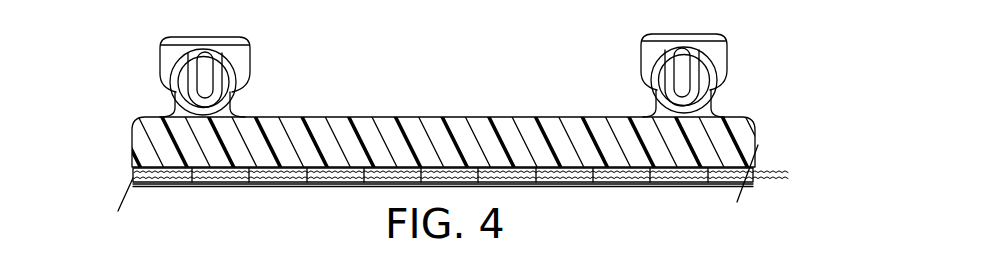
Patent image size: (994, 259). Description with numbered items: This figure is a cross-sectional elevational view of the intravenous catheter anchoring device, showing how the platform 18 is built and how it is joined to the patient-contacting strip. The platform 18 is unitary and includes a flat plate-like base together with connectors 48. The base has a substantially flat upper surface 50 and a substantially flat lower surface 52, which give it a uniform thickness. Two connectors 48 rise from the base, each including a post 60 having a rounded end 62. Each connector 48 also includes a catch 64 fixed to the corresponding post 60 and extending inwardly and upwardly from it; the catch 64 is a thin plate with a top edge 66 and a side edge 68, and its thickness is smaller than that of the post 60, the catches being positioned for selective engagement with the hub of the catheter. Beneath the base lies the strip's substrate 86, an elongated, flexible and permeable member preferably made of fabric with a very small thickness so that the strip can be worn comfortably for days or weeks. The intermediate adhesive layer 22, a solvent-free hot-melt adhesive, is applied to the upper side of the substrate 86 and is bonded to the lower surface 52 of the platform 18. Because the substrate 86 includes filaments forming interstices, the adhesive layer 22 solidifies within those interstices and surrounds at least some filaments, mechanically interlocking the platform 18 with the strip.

The platform 18 is at (747, 117).
The intermediate adhesive layer 22 is at (132, 170).
The connectors 48 is at (652, 100).
The upper surface 50 is at (375, 116).
The lower surface 52 is at (465, 167).
The post 60 is at (445, 61).
The rounded end 62 is at (693, 34).
The catch 64 is at (688, 77).
The top edge 66 is at (203, 52).
The side edge 68 is at (200, 79).
The substrate 86 is at (680, 176).